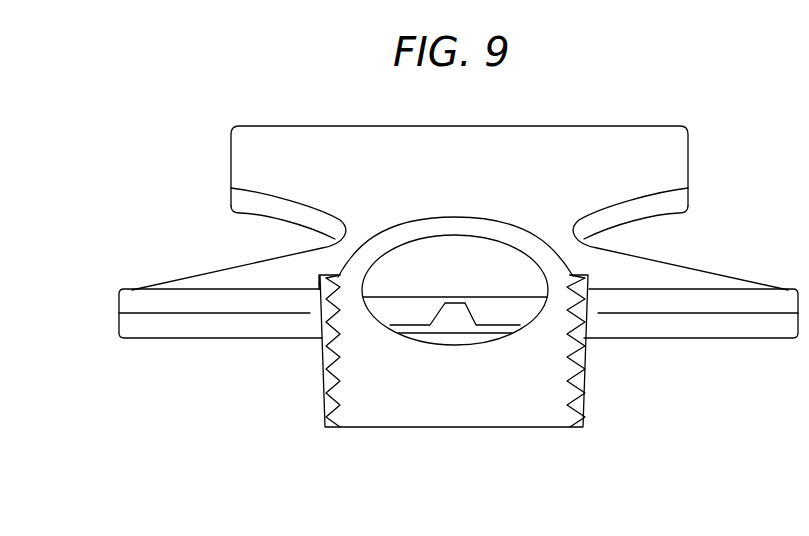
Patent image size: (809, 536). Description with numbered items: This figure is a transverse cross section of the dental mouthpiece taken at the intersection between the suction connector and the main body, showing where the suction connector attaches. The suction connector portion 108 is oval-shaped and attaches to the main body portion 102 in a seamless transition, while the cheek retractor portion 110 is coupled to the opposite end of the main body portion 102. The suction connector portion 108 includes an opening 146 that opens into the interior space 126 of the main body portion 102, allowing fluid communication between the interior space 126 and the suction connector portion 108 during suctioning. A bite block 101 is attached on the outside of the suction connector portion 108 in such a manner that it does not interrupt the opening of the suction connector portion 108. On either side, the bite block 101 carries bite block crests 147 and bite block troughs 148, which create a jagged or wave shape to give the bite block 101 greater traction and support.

The bite block 101 is at (495, 430).
The main body portion 102 is at (695, 260).
The suction connector portion 108 is at (499, 222).
The cheek retractor portion 110 is at (228, 148).
The interior space 126 is at (429, 271).
The opening 146 is at (425, 367).
The bite block crests 147 is at (326, 382).
The bite block troughs 148 is at (340, 332).